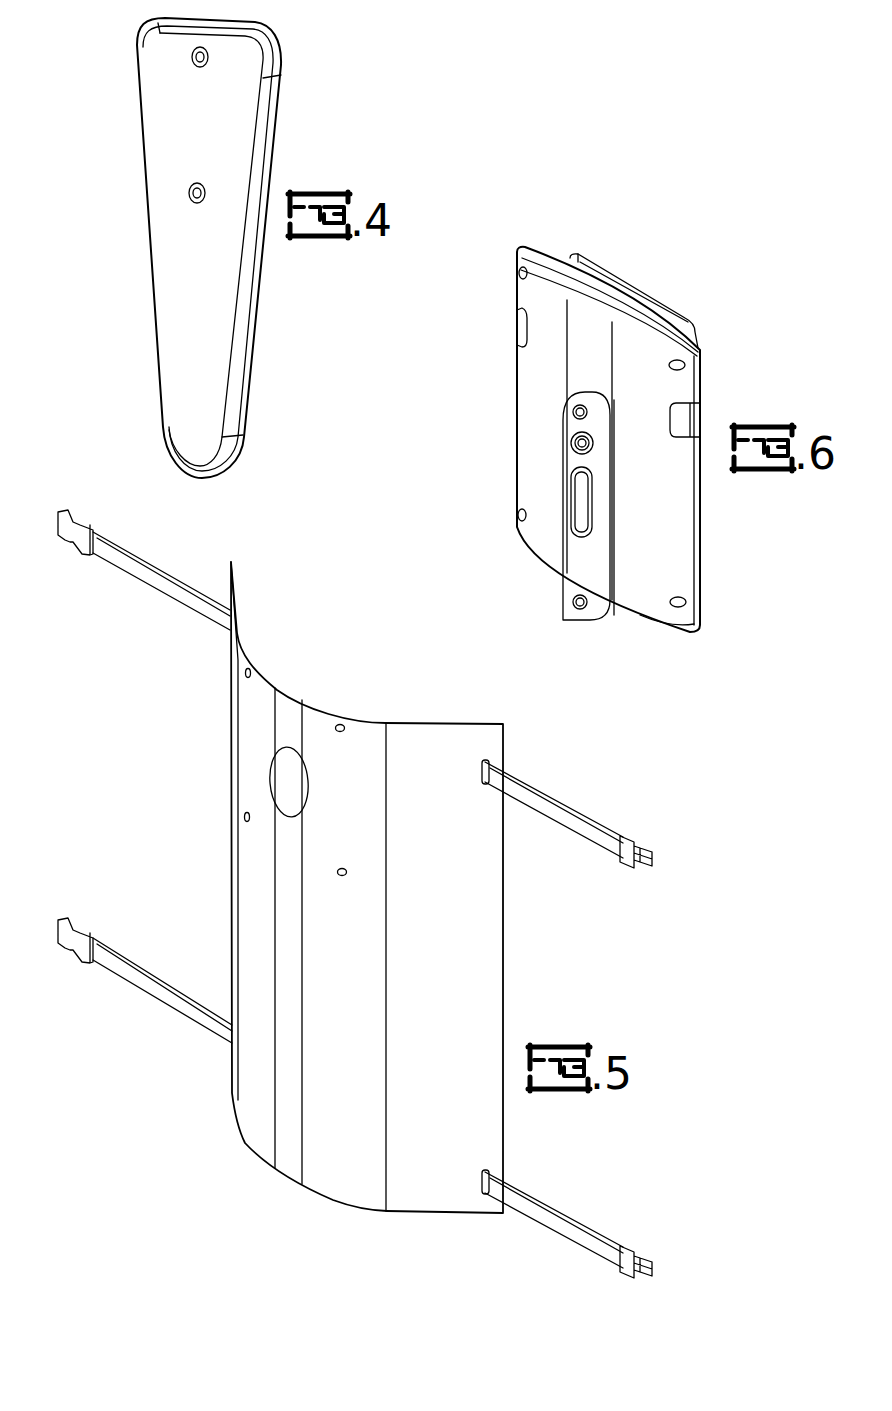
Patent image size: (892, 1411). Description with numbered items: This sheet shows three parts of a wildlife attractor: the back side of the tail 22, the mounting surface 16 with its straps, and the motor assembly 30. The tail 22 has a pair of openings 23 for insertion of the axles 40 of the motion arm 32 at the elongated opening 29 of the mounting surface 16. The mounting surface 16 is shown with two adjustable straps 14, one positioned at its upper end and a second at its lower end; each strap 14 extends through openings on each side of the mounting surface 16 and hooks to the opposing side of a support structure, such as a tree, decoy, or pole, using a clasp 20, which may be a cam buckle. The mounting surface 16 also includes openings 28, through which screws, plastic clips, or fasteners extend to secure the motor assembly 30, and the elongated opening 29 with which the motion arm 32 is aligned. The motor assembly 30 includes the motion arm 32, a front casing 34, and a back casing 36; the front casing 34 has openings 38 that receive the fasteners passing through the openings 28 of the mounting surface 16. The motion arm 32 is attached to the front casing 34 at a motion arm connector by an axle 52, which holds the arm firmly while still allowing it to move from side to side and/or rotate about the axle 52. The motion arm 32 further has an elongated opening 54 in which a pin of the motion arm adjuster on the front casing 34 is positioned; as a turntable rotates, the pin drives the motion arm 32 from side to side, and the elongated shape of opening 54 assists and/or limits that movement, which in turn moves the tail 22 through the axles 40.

In FIG. 5, the adjustable strap 14 is at (150, 578).
In FIG. 5, the mounting surface 16 is at (468, 895).
In FIG. 5, the clasp 20 is at (80, 528).
In FIG. 4, the tail 22 is at (218, 311).
In FIG. 4, the openings 23 is at (206, 52).
In FIG. 5, the openings 28 is at (251, 672).
In FIG. 5, the elongated opening 29 is at (290, 800).
In FIG. 6, the motor assembly 30 is at (493, 394).
In FIG. 6, the motion arm 32 is at (579, 568).
In FIG. 6, the front casing 34 is at (657, 510).
In FIG. 6, the back casing 36 is at (640, 296).
In FIG. 6, the openings 38 is at (519, 275).
In FIG. 6, the axles 40 is at (577, 412).
In FIG. 6, the axle 52 is at (591, 448).
In FIG. 6, the opening 54 is at (594, 522).